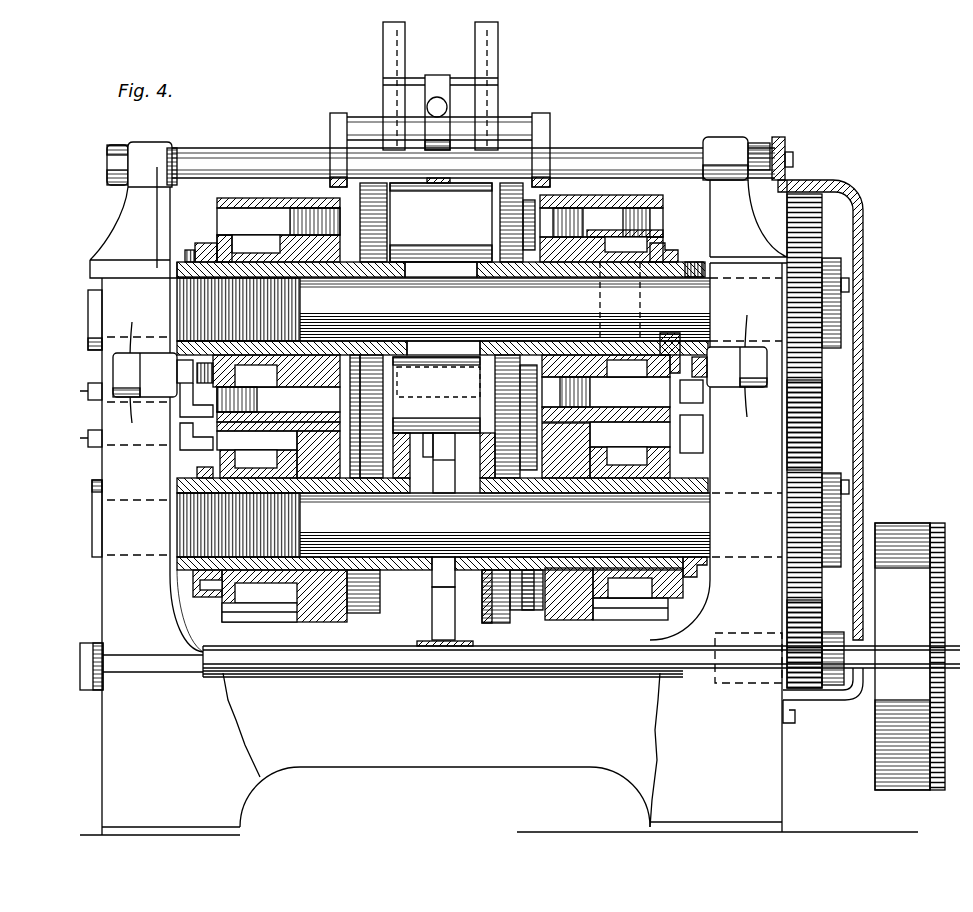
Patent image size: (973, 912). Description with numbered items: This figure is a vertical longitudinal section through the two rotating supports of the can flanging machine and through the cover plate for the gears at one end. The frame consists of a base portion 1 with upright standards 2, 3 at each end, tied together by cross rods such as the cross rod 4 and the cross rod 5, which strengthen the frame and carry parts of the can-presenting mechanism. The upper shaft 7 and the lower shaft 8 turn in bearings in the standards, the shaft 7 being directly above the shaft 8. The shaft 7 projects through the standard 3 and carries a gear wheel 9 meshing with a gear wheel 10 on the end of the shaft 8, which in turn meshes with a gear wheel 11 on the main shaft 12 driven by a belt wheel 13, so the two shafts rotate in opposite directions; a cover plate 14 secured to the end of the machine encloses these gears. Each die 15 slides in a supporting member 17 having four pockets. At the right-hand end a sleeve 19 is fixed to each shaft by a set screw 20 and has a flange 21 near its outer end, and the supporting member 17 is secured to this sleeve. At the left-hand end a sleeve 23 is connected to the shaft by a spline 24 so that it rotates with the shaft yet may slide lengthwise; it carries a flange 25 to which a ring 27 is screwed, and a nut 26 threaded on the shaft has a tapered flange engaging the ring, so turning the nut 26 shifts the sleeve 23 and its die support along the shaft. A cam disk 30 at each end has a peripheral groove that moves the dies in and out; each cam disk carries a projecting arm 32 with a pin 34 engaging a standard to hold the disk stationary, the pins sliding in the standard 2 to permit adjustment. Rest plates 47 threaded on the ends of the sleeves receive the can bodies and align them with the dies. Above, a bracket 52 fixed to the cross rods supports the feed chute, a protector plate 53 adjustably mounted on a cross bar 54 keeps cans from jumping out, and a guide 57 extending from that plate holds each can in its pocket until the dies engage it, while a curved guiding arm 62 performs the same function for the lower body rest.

The base portion 1 is at (499, 754).
The upright standard 2 is at (145, 484).
The upright standard 3 is at (716, 481).
The cross rod 4 is at (640, 160).
The cross rod 5 is at (705, 380).
The shaft 7 is at (443, 301).
The shaft 8 is at (443, 525).
The gear wheel 9 is at (822, 228).
The gear wheel 10 is at (822, 436).
The gear wheel 11 is at (812, 688).
The main shaft 12 is at (560, 660).
The belt wheel 13 is at (877, 620).
The cover plate 14 is at (863, 380).
The die 15 is at (367, 193).
The supporting member 17 is at (307, 237).
The sleeve 19 is at (530, 626).
The set screw 20 is at (693, 262).
The flange 21 is at (673, 243).
The sleeve 23 is at (367, 277).
The spline 24 is at (423, 269).
The flange 25 is at (210, 243).
The nut 26 is at (193, 240).
The ring 27 is at (190, 255).
The cam disk 30 is at (228, 215).
The projecting arm 32 is at (187, 400).
The pin 34 is at (95, 432).
The rest plate 47 is at (403, 358).
The bracket 52 is at (340, 113).
The protector plate 53 is at (437, 80).
The cross bar 54 is at (513, 120).
The guide 57 is at (500, 46).
The curved guiding arm 62 is at (444, 572).